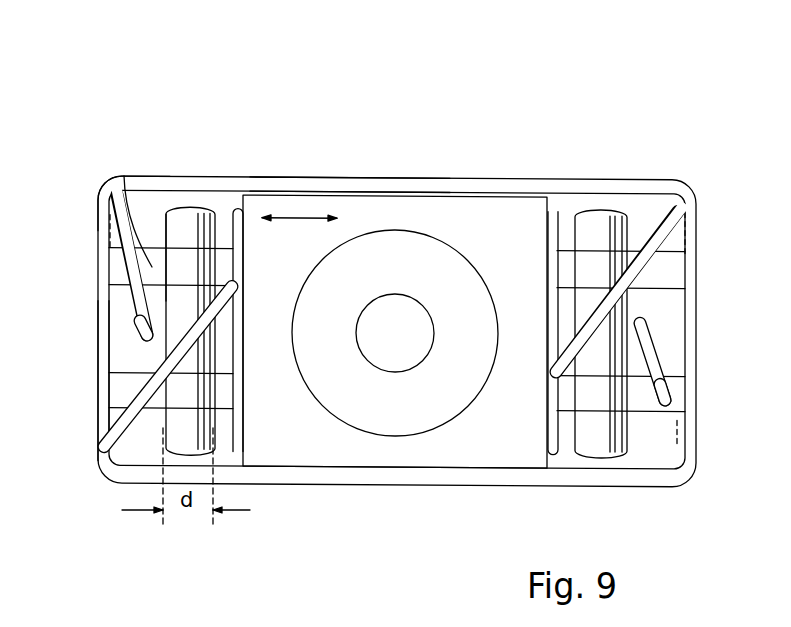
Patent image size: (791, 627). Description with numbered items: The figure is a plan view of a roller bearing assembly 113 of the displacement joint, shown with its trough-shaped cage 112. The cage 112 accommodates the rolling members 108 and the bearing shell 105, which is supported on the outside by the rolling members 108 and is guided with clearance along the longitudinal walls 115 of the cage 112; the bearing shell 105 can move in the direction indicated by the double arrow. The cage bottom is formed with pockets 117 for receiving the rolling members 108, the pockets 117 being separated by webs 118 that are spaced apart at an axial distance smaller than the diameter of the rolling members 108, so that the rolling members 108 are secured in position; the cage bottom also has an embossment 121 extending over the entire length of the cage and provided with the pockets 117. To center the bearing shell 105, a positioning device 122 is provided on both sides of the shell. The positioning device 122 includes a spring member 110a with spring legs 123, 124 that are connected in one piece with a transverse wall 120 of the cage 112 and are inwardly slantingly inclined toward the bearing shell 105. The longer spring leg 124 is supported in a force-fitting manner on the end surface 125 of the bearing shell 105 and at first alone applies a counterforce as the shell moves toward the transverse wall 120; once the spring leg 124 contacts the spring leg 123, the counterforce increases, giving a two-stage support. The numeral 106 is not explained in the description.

The bearing shell 105 is at (286, 435).
The disc 106 is at (431, 414).
The rolling members 108 is at (185, 225).
The spring member 110a is at (133, 333).
The cage 112 is at (476, 174).
The roller bearing assembly 113 is at (116, 170).
The longitudinal walls 115 is at (331, 186).
The pockets 117 is at (158, 232).
The webs 118 is at (237, 205).
The transverse wall 120 is at (98, 393).
The embossment 121 is at (124, 175).
The positioning device 122 is at (84, 269).
The spring leg 123 is at (135, 302).
The spring leg 124 is at (113, 427).
The end surface 125 is at (550, 458).